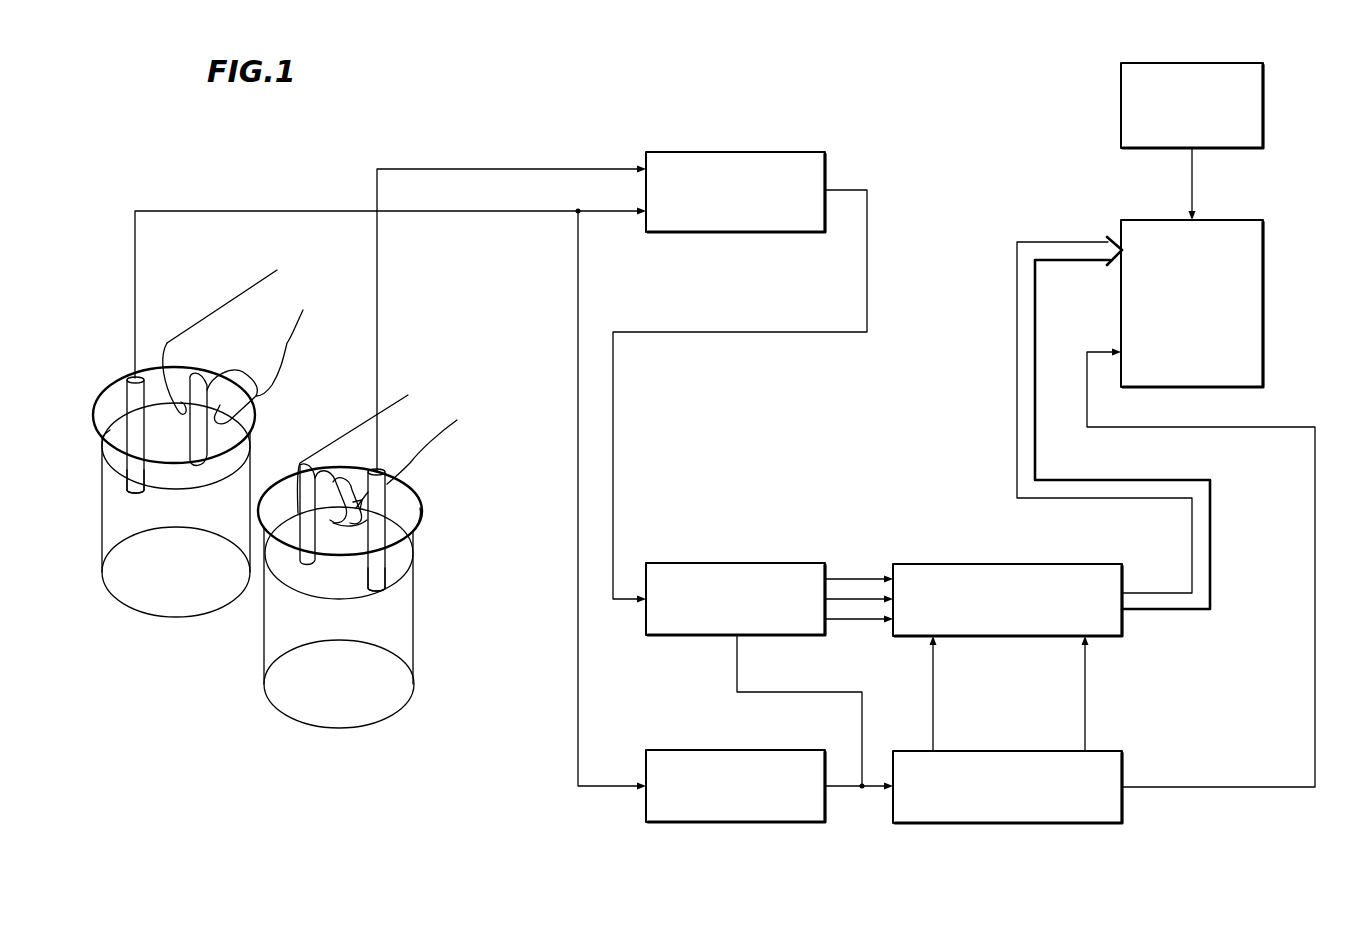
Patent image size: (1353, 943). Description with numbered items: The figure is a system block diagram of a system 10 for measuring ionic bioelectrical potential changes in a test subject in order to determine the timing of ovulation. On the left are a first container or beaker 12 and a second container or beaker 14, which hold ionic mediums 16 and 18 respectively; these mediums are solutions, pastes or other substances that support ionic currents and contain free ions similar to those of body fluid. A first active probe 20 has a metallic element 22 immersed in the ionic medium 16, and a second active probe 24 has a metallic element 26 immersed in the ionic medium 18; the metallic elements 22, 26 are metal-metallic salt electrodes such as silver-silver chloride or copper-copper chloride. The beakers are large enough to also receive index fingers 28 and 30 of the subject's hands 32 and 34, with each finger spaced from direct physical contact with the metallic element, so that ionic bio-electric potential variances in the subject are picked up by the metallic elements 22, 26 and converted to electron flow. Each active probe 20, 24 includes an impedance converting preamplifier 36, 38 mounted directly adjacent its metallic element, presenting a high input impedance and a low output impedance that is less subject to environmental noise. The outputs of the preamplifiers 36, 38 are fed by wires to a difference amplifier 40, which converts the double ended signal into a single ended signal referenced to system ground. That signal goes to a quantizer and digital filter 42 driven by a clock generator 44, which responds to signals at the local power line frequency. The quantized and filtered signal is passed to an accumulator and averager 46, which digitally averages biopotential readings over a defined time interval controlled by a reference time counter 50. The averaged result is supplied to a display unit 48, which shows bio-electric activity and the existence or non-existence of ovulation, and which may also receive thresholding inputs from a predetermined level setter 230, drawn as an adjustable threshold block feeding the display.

The system 10 is at (803, 104).
The first container or beaker 12 is at (357, 728).
The second container or beaker 14 is at (168, 618).
The ionic medium 16 is at (342, 626).
The ionic medium 18 is at (178, 518).
The first active probe 20 is at (420, 508).
The metallic element 22 is at (385, 578).
The second active probe 24 is at (123, 420).
The metallic element 26 is at (128, 487).
The index finger 28 is at (313, 563).
The index finger 30 is at (200, 483).
The subject's hand 32 is at (428, 430).
The subject's hand 34 is at (222, 312).
The impedance converting preamplifier 36 is at (385, 482).
The impedance converting preamplifier 38 is at (128, 378).
The difference amplifier 40 is at (818, 150).
The quantizer and digital filter 42 is at (772, 563).
The clock generator 44 is at (751, 750).
The accumulator and averager 46 is at (1008, 564).
The display unit 48 is at (1258, 275).
The reference time counter 50 is at (1098, 751).
The predetermined level setter 230 is at (1263, 105).